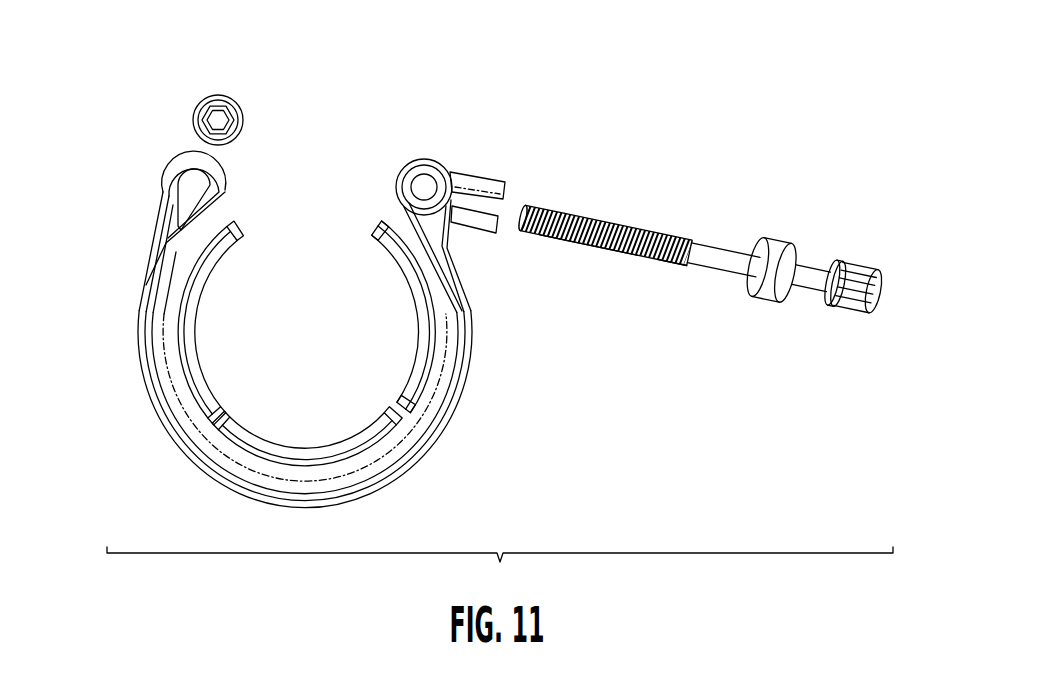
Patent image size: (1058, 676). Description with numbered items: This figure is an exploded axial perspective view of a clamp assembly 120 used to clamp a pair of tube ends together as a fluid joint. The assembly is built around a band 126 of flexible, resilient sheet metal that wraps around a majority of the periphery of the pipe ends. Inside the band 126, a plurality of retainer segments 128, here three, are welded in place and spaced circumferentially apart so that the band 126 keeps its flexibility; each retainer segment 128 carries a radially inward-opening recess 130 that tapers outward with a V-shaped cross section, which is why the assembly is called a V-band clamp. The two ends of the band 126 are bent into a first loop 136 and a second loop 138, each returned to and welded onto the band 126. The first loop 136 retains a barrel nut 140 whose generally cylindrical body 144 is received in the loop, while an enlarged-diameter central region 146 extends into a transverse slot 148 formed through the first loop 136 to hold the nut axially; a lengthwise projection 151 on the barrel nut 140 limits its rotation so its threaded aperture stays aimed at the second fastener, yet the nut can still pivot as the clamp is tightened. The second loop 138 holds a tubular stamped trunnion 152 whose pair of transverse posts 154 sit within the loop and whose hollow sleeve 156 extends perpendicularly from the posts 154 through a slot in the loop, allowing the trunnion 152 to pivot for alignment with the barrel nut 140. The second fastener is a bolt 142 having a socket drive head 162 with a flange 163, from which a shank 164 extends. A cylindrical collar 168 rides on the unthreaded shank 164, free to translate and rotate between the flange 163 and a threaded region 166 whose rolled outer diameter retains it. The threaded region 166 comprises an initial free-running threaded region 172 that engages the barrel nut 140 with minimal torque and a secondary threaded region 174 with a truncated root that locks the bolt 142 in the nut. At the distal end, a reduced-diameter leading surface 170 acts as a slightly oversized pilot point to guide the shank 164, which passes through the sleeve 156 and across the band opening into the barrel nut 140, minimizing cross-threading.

The clamp assembly 120 is at (500, 574).
The band 126 is at (428, 442).
The retainer segments 128 is at (430, 384).
The recess 130 is at (200, 379).
The first loop 136 is at (170, 193).
The slot 148 is at (178, 175).
The barrel nut 140 is at (217, 97).
The body 144 is at (213, 98).
The central region 146 is at (245, 110).
The projection 151 is at (200, 128).
The second loop 138 is at (415, 160).
The posts 154 is at (430, 160).
The sleeve 156 is at (465, 170).
The trunnion 152 is at (492, 168).
The bolt 142 is at (713, 246).
The leading surface 170 is at (535, 210).
The threaded region 166 is at (573, 223).
The initial threaded region 172 is at (578, 238).
The secondary threaded region 174 is at (672, 262).
The collar 168 is at (782, 298).
The shank 164 is at (817, 277).
The flange 163 is at (843, 268).
The head 162 is at (867, 275).